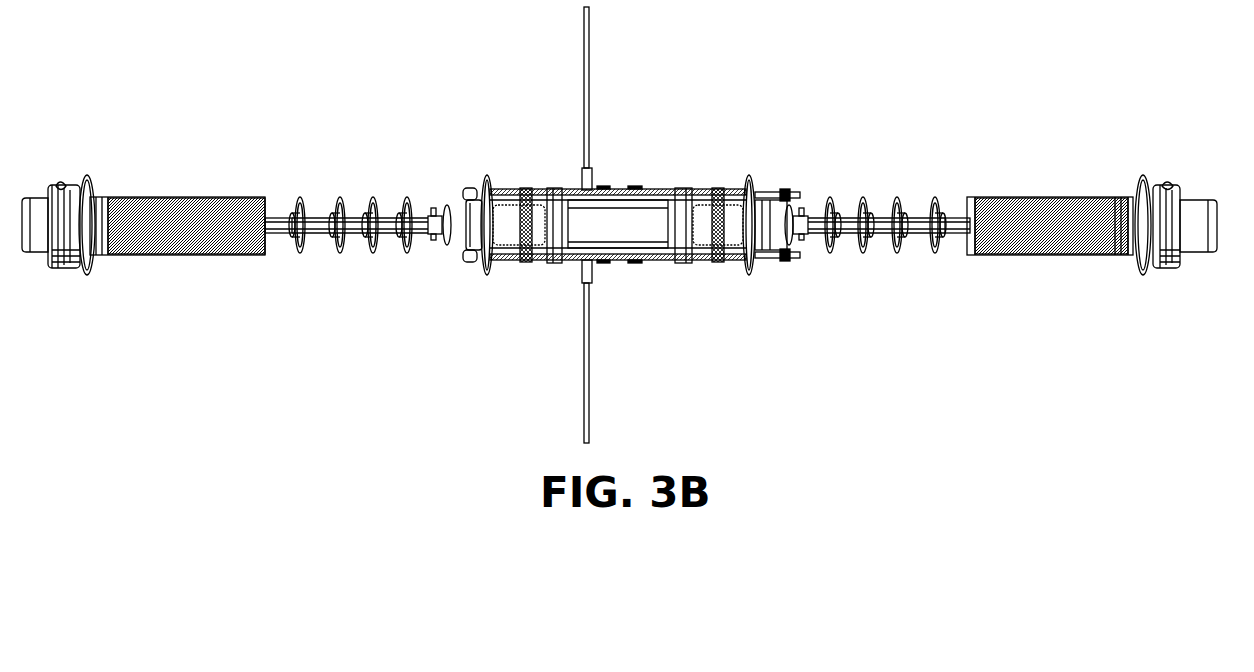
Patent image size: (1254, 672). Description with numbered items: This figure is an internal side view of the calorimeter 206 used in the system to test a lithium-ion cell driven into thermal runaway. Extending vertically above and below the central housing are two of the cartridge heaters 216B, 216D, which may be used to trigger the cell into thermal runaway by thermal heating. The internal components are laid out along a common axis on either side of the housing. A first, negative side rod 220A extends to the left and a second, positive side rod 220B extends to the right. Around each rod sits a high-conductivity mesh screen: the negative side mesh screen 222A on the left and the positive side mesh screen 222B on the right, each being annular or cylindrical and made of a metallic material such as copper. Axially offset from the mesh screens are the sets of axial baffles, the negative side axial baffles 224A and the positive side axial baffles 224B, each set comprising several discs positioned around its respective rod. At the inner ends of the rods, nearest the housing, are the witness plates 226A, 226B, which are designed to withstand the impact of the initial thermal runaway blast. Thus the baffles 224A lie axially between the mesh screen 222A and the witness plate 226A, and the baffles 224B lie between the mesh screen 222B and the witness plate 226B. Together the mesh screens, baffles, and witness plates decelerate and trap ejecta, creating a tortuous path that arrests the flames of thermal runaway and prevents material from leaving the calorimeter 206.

The calorimeter 206 is at (316, 36).
The cartridge heater 216B is at (590, 50).
The cartridge heater 216D is at (590, 385).
The first side rod 220A is at (284, 234).
The second side rod 220B is at (961, 234).
The first side mesh screen 222A is at (150, 246).
The second side mesh screen 222B is at (1082, 250).
The first set of side axial baffles 224A is at (413, 178).
The second set of side axial baffles 224B is at (945, 178).
The first side witness plate 226A is at (447, 247).
The second side witness plate 226B is at (797, 259).